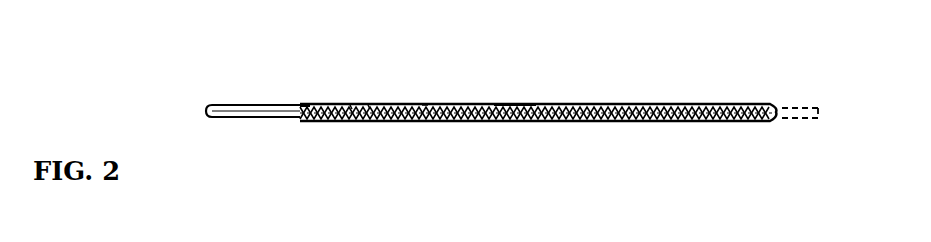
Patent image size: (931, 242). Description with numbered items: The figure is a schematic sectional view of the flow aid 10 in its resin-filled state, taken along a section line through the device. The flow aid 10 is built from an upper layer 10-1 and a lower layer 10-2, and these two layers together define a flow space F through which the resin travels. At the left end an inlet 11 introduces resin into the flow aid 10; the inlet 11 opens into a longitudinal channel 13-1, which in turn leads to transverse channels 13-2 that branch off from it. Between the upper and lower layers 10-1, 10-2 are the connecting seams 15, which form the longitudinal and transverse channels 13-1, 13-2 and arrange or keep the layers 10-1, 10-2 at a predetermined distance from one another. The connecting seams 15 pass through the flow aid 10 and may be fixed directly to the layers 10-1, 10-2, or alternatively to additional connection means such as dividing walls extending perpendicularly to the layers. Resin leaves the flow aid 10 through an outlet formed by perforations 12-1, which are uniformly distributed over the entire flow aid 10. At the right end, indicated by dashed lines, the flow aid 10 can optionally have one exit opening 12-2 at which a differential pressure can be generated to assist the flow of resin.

The flow aid 10 is at (291, 58).
The inlet 11 is at (246, 118).
The longitudinal channel 13-1 is at (304, 105).
The connecting seams 15 is at (353, 104).
The flow space F is at (426, 104).
The transverse channels 13-2 is at (496, 104).
The upper layer 10-1 is at (704, 104).
The lower layer 10-2 is at (575, 121).
The perforations 12-1 is at (647, 123).
The exit opening 12-2 is at (823, 87).